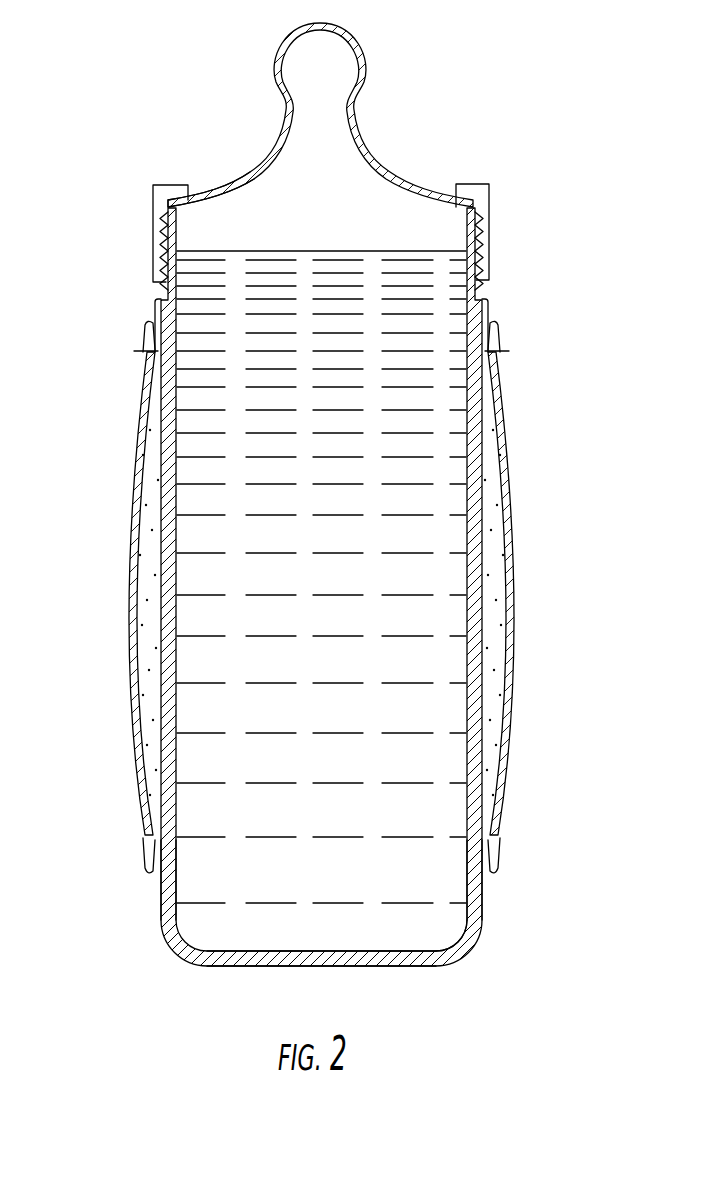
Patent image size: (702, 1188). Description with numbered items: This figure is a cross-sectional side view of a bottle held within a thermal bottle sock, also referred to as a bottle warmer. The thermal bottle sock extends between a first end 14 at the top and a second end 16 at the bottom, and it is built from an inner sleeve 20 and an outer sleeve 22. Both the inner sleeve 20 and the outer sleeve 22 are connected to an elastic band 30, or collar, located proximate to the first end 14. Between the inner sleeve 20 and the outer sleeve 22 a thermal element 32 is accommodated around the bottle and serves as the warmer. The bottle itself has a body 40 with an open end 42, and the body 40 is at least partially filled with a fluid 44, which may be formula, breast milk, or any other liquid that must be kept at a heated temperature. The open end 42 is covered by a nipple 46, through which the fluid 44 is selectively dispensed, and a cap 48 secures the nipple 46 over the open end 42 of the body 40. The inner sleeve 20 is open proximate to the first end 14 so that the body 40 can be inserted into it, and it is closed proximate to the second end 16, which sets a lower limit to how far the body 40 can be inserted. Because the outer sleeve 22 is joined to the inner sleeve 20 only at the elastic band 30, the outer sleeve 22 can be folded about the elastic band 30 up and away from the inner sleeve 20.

The first end 14 is at (479, 303).
The second end 16 is at (378, 970).
The inner sleeve 20 is at (160, 905).
The outer sleeve 22 is at (133, 500).
The elastic band 30 is at (148, 322).
The thermal element 32 is at (147, 637).
The body 40 is at (427, 948).
The open end 42 is at (176, 240).
The fluid 44 is at (400, 602).
The nipple 46 is at (360, 127).
The cap 48 is at (490, 210).